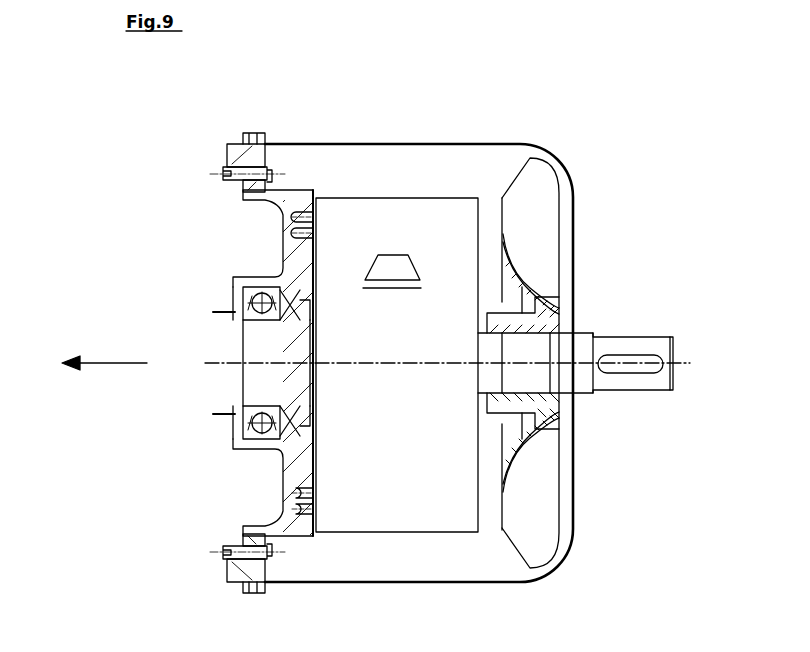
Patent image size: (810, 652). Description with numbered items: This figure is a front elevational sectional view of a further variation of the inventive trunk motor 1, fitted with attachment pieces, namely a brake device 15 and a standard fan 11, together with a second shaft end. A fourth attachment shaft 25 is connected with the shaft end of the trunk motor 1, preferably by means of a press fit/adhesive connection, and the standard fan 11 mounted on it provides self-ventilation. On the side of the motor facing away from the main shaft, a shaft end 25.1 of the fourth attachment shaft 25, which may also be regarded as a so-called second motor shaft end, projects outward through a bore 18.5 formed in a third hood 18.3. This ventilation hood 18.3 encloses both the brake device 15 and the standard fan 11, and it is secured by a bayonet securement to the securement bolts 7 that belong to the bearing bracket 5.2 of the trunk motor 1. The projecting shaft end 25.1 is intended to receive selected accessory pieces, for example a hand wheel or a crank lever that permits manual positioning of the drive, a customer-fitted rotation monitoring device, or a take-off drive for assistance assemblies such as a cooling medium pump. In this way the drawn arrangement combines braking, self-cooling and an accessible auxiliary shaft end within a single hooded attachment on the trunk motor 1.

The trunk motor 1 is at (31, 373).
The bearing bracket 5.2 is at (293, 262).
The securement bolts 7 is at (252, 130).
The standard fan 11 is at (541, 492).
The brake device 15 is at (382, 498).
The third hood 18.3 is at (573, 201).
The bore 18.5 is at (575, 331).
The fourth attachment shaft 25 is at (573, 345).
The shaft end 25.1 is at (628, 382).